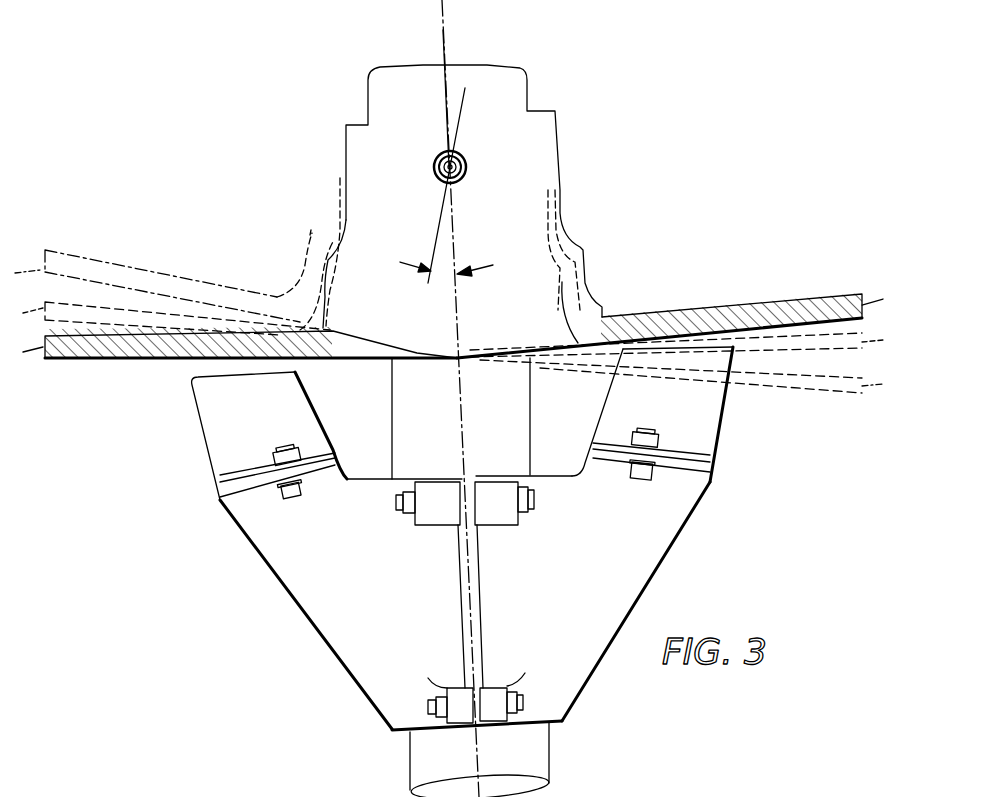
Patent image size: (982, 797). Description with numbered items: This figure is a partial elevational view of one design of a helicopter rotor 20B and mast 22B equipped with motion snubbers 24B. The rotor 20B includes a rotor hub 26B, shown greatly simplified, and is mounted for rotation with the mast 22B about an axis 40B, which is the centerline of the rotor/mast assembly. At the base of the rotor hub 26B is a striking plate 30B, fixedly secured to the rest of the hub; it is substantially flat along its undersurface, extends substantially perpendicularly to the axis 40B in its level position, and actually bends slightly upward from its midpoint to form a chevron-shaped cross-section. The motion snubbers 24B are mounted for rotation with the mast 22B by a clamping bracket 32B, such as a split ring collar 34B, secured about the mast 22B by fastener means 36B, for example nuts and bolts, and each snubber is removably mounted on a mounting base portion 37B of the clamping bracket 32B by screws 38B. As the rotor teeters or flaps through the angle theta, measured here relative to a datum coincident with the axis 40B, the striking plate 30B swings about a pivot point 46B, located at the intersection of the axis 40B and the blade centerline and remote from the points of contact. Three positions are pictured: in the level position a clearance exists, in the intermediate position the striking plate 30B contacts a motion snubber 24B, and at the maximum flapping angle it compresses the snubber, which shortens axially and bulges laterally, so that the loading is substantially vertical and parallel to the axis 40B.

The helicopter rotor 20B is at (572, 102).
The axis 40B is at (443, 40).
The rotor hub 26B is at (356, 157).
The pivot point 46B is at (467, 176).
The striking plate 30B is at (133, 354).
The motion snubber 24B is at (208, 425).
The mounting base portion 37B is at (220, 466).
The screws 38B is at (285, 494).
The fastener means 36B is at (397, 511).
The split ring collar 34B is at (662, 567).
The clamping bracket 32B is at (316, 652).
The mast 22B is at (538, 758).